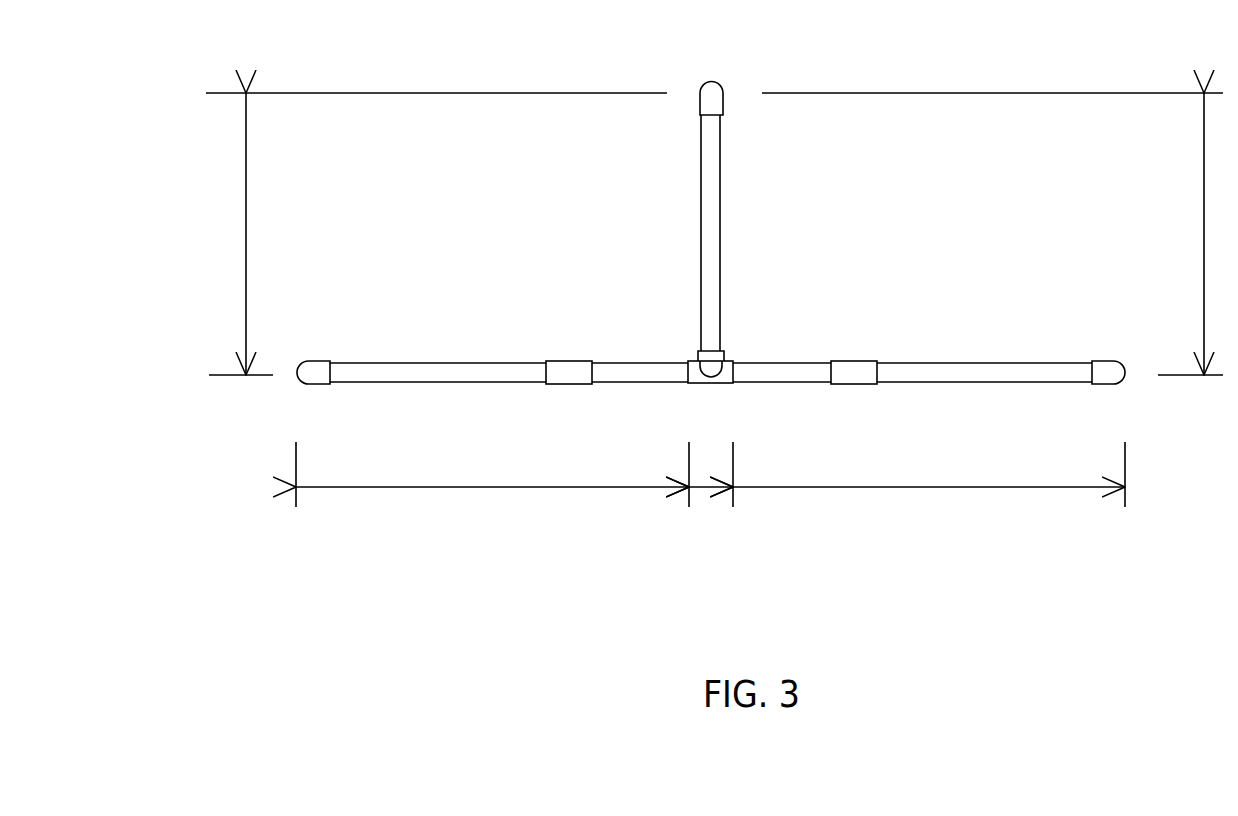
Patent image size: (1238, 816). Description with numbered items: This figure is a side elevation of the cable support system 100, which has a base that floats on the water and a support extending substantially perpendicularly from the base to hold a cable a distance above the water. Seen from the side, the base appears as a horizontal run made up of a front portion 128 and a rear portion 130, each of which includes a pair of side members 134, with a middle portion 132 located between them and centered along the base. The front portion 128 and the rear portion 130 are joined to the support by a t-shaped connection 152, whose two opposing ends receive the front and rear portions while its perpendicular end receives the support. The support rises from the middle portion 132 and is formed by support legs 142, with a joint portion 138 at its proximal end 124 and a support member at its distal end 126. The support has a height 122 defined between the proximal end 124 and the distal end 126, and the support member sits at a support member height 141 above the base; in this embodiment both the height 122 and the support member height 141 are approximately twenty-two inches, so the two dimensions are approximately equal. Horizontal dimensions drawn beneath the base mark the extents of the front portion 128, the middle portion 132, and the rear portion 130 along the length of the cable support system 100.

The cable support system 100 is at (383, 180).
The height 122 is at (1204, 232).
The proximal end 124 is at (707, 353).
The distal end 126 is at (700, 84).
The front portion 128 is at (477, 487).
The rear portion 130 is at (884, 487).
The middle portion 132 is at (712, 487).
The side member 134 is at (437, 383).
The joint portion 138 is at (700, 380).
The support member height 141 is at (246, 250).
The support leg 142 is at (700, 195).
The t-shaped connection 152 is at (722, 380).